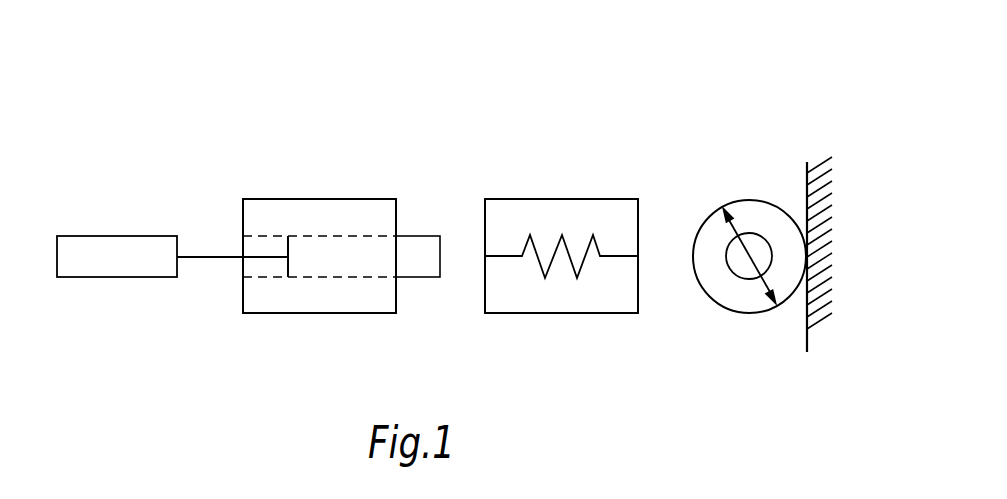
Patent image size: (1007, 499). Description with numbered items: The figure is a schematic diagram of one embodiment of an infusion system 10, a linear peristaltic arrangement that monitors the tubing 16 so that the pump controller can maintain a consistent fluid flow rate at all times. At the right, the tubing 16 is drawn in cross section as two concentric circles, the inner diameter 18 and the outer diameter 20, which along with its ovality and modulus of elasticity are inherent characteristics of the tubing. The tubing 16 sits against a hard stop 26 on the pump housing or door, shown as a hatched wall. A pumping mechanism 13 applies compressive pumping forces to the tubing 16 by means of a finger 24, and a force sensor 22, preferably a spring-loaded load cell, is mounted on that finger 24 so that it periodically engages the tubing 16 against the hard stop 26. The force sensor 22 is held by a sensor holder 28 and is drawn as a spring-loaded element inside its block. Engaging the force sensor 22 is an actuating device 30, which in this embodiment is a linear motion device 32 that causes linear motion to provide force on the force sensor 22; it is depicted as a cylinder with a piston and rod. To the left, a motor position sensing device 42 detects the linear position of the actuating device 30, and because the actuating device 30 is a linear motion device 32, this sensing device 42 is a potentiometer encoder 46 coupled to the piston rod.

The infusion system 10 is at (597, 19).
The pumping mechanism 13 is at (234, 127).
The tubing 16 is at (745, 199).
The inner diameter 18 is at (737, 279).
The outer diameter 20 is at (776, 303).
The force sensor 22 is at (494, 127).
The finger 24 is at (638, 224).
The hard stop 26 is at (812, 333).
The sensor holder 28 is at (602, 313).
The actuating device 30 is at (219, 350).
The linear motion device 32 is at (347, 199).
The motor position sensing device 42 is at (74, 137).
The potentiometer encoder 46 is at (105, 236).